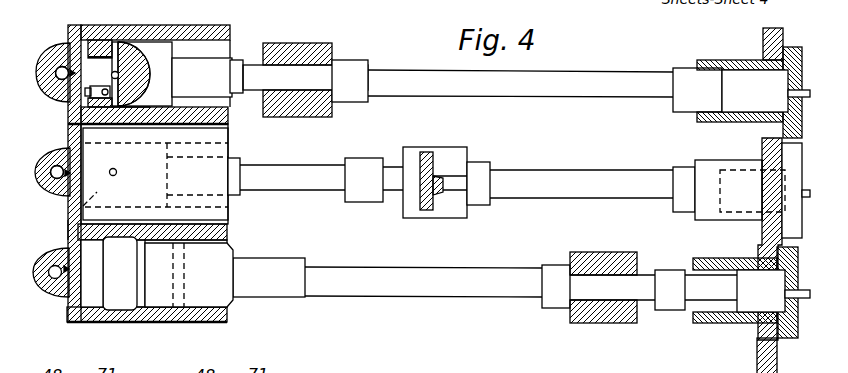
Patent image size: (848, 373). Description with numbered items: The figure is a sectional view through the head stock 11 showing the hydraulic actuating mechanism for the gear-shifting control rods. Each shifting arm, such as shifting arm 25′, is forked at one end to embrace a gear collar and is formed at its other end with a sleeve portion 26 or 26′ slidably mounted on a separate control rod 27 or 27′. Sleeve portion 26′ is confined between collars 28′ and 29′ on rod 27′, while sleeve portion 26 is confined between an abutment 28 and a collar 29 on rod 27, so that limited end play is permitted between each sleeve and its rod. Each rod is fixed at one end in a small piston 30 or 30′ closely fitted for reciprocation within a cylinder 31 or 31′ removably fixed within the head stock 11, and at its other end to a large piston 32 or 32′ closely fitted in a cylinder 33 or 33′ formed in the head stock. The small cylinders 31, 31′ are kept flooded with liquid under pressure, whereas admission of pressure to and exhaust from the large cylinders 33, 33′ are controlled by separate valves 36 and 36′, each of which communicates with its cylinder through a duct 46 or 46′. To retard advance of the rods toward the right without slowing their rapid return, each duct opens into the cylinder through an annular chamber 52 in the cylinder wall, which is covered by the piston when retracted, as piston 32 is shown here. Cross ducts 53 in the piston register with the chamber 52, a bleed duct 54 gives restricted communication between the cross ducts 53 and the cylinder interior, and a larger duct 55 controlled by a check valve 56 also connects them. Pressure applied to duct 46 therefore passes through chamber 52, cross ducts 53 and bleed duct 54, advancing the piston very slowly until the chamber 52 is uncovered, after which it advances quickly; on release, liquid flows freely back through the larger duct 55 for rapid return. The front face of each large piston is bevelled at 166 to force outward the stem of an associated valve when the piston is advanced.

The head stock 11 is at (765, 202).
The shifting arm 25′ is at (425, 208).
The sleeve portion 26 is at (304, 47).
The sleeve portion 26′ is at (437, 150).
The control rod 27 is at (608, 97).
The control rod 27′ is at (518, 177).
The abutment 28 is at (232, 65).
The collar 28′ is at (360, 168).
The collar 29 is at (355, 65).
The collar 29′ is at (483, 167).
The small piston 30 is at (682, 75).
The small piston 30′ is at (682, 173).
The cylinder 31 is at (718, 62).
The cylinder 31′ is at (735, 172).
The large piston 32 is at (158, 50).
The large piston 32′ is at (64, 226).
The cylinder 33 is at (212, 33).
The cylinder 33′ is at (218, 142).
The valve 36 is at (42, 58).
The valve 36′ is at (45, 153).
The duct 46 is at (62, 83).
The duct 46′ is at (55, 200).
The annular chamber 52 is at (123, 40).
The cross ducts 53 is at (112, 42).
The bleed duct 54 is at (100, 37).
The larger duct 55 is at (155, 173).
The check valve 56 is at (136, 100).
The bevelled front face 166 is at (171, 85).